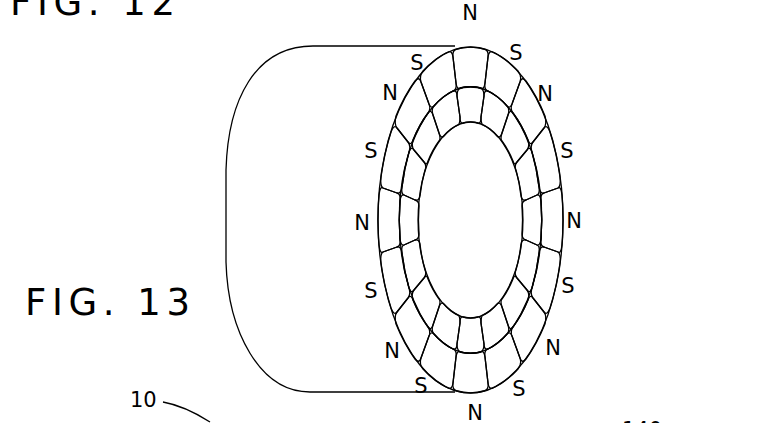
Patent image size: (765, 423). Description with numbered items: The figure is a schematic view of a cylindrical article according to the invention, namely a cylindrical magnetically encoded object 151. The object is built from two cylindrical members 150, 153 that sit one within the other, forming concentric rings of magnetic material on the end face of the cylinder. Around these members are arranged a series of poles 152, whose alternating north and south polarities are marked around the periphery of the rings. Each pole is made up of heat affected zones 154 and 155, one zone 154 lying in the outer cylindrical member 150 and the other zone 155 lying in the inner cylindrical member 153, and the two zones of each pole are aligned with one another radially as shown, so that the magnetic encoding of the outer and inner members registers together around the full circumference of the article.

The cylindrical member 150 is at (495, 63).
The magnet assembly 151 is at (570, 108).
The poles 152 is at (550, 297).
The cylindrical member 153 is at (513, 125).
The heat affected zone 154 is at (552, 173).
The heat affected zone 155 is at (535, 212).